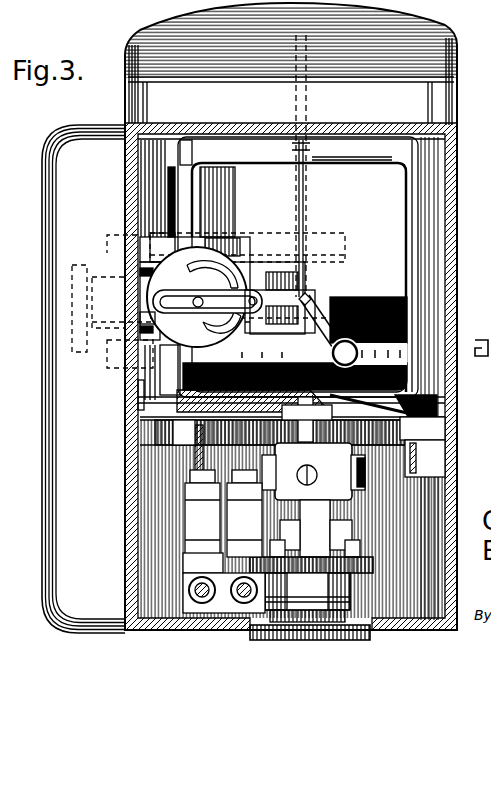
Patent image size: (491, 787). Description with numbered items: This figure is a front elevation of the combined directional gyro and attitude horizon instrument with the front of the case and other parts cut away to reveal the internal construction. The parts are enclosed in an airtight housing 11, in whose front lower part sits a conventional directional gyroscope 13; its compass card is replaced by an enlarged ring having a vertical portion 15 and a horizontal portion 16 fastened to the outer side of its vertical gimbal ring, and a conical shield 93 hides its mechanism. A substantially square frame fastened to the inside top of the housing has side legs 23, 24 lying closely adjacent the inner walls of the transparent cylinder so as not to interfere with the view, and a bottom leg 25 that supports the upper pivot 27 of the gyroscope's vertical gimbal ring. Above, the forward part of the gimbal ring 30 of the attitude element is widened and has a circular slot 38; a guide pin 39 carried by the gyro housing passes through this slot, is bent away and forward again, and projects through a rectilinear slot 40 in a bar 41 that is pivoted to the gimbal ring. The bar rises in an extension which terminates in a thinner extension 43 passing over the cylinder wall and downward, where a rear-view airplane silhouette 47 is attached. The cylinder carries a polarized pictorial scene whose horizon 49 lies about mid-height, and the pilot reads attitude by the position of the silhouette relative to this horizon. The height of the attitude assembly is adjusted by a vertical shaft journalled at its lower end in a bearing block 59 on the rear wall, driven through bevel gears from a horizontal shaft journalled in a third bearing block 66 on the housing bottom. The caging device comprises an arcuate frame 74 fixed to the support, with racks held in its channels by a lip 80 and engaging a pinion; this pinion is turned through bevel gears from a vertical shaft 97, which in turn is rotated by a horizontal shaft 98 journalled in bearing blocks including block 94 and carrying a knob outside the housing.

The airtight housing 11 is at (460, 246).
The directional gyroscope 13 is at (349, 514).
The vertical portion 15 is at (445, 422).
The horizontal portion 16 is at (440, 446).
The side leg 23 is at (200, 198).
The side leg 24 is at (405, 198).
The bottom leg 25 is at (292, 414).
The upper pivot 27 is at (250, 408).
The gimbal ring 30 is at (132, 248).
The circular slot 38 is at (153, 273).
The guide pin 39 is at (251, 296).
The rectilinear slot 40 is at (165, 300).
The bar 41 is at (150, 318).
The thinner extension 43 is at (308, 150).
The silhouette 47 is at (318, 292).
The horizon 49 is at (374, 297).
The bearing block 59 is at (244, 513).
The third bearing block 66 is at (244, 596).
The frame 74 is at (138, 394).
The lip 80 is at (484, 338).
The conical shield 93 is at (383, 409).
The bearing block 94 is at (190, 600).
The vertical shaft 97 is at (195, 457).
The horizontal shaft 98 is at (195, 583).